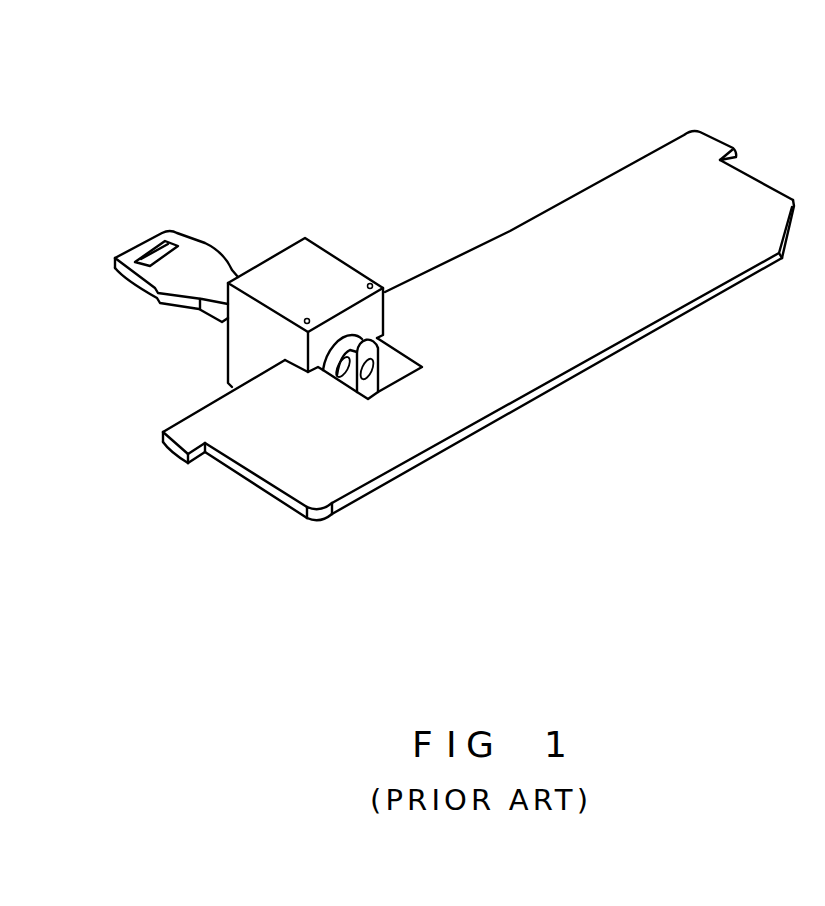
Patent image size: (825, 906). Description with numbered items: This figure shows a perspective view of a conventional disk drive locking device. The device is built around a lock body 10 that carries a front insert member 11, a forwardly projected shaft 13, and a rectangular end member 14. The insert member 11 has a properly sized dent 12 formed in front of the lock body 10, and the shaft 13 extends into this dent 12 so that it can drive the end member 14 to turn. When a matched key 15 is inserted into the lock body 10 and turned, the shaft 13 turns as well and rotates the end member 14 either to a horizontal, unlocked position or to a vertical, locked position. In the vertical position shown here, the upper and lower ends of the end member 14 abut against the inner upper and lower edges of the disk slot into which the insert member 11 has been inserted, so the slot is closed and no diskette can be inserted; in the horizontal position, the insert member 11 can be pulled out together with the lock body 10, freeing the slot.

The lock body 10 is at (293, 262).
The front insert member 11 is at (565, 218).
The dent 12 is at (390, 367).
The forwardly projected shaft 13 is at (343, 363).
The rectangular end member 14 is at (380, 393).
The key 15 is at (188, 250).